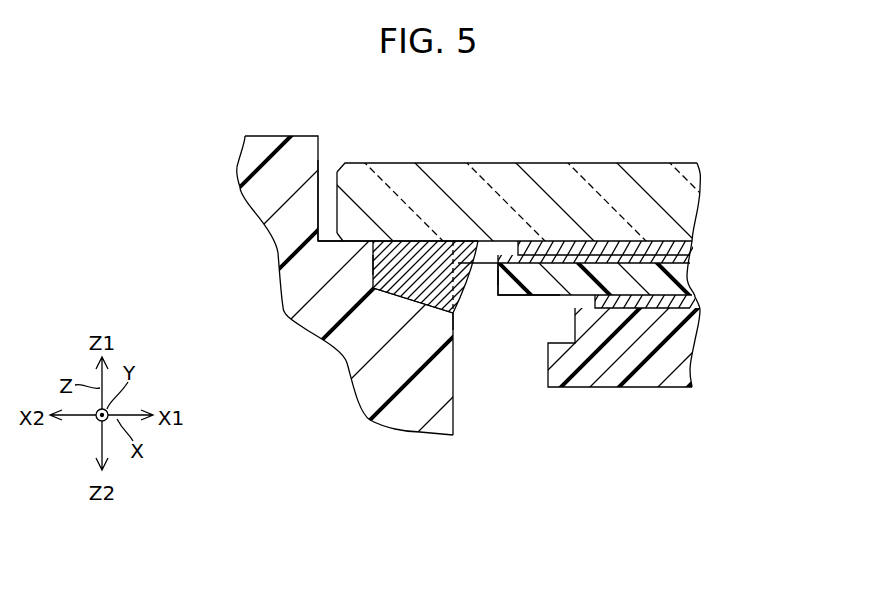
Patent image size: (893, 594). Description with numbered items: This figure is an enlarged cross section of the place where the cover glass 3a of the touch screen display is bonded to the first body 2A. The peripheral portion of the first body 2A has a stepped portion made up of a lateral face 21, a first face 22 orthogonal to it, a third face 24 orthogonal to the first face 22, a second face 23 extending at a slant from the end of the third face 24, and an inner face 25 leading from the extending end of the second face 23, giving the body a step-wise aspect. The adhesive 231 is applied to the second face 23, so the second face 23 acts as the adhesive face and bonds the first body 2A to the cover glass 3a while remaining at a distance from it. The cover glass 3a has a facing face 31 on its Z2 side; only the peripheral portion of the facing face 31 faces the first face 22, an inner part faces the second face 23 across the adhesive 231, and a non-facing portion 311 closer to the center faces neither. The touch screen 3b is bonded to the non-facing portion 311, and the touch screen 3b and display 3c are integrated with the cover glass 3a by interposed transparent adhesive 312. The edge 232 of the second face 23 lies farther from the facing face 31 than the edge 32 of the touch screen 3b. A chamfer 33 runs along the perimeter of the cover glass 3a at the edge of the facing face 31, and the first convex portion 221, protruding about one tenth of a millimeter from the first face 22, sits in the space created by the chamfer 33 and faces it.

The first body 2A is at (270, 136).
The lateral face 21 is at (320, 197).
The first convex portion 221 is at (337, 238).
The first face 22 is at (357, 241).
The adhesive 231 is at (412, 260).
The edge 232 is at (457, 316).
The second face 23 is at (436, 300).
The third face 24 is at (373, 282).
The inner face 25 is at (454, 388).
The chamfer 33 is at (375, 268).
The facing face 31 is at (466, 262).
The non-facing portion 311 is at (550, 280).
The transparent adhesive 312 is at (688, 247).
The edge 32 is at (494, 280).
The cover glass 3a is at (682, 205).
The touch screen 3b is at (685, 278).
The display 3c is at (682, 350).